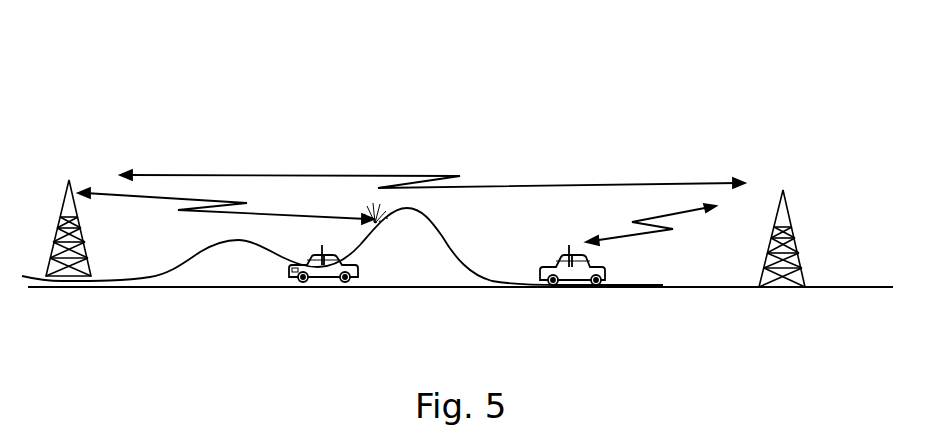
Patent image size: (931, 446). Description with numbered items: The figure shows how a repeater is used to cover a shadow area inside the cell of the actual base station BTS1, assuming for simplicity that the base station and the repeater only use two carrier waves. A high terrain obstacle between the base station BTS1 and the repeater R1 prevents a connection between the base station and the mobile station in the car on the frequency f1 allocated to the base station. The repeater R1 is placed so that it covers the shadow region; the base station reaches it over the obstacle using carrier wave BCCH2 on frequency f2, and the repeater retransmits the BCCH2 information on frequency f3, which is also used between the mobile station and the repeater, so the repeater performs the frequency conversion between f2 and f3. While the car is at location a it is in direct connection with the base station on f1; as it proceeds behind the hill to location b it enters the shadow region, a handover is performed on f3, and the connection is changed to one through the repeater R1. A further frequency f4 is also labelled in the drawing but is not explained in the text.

The base station BTS1 is at (60, 257).
The repeater station R1 is at (782, 255).
The location a is at (549, 304).
The location b is at (572, 283).
The frequency f1 is at (226, 203).
The frequency f2 is at (432, 166).
The frequency f3 is at (651, 224).
The frequency f4 is at (573, 22).